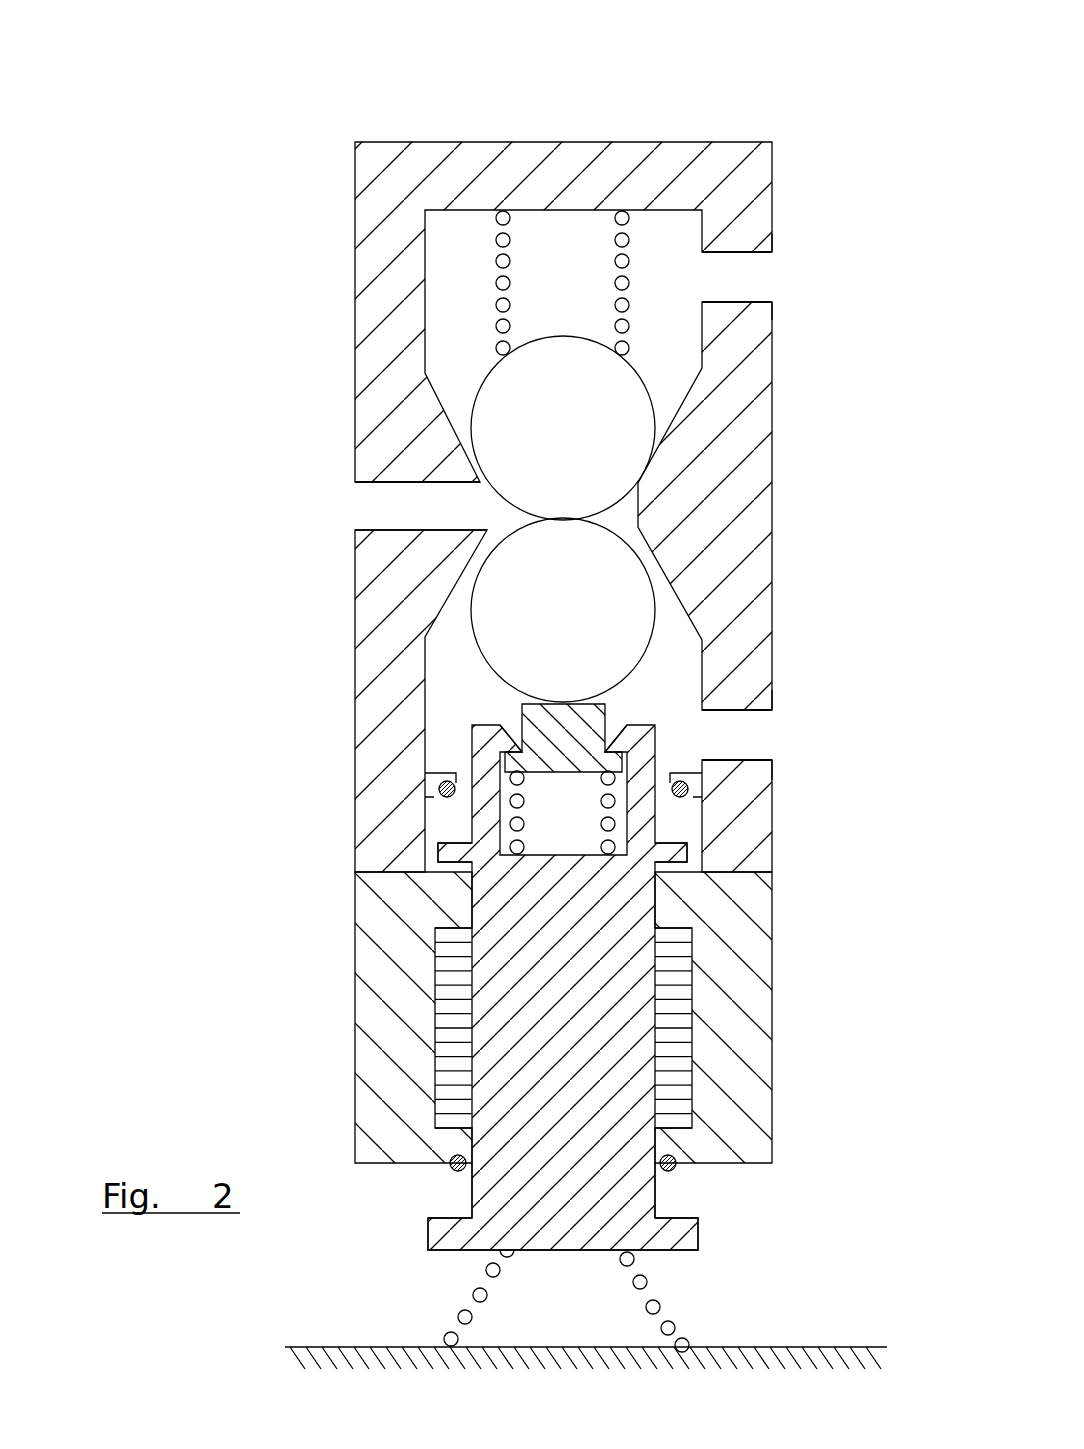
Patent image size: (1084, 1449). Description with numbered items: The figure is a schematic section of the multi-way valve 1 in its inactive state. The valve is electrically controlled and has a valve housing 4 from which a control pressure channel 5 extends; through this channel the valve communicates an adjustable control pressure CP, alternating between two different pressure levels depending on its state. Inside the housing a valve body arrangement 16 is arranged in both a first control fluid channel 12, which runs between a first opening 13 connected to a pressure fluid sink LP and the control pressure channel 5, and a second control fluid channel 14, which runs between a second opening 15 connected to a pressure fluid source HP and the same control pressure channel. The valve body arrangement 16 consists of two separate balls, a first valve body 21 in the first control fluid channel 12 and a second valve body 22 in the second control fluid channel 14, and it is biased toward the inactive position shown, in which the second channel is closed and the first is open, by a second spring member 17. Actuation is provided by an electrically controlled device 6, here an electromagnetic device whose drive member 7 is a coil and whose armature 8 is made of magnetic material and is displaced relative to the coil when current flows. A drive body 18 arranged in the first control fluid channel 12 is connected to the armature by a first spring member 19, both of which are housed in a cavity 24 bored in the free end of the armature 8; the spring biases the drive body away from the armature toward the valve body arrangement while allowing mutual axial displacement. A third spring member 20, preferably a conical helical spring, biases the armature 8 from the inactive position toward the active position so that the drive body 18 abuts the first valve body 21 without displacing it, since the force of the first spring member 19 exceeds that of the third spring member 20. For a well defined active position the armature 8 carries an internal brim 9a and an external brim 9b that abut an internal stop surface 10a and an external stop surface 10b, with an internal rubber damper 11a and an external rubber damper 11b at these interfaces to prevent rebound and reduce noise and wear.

The multi-way valve 1 is at (640, 120).
The valve housing 4 is at (377, 313).
The control pressure channel 5 is at (410, 503).
The electrically controlled device 6 is at (340, 942).
The drive member 7 is at (452, 1063).
The armature 8 is at (453, 1190).
The internal brim 9a is at (683, 832).
The external brim 9b is at (683, 1230).
The internal stop surface 10a is at (433, 790).
The external stop surface 10b is at (677, 1167).
The internal rubber damper 11a is at (443, 788).
The external rubber damper 11b is at (450, 1168).
The first control fluid channel 12 is at (728, 717).
The first opening 13 is at (770, 726).
The second control fluid channel 14 is at (733, 273).
The second opening 15 is at (773, 282).
The valve body arrangement 16 is at (470, 665).
The second spring member 17 is at (503, 242).
The drive body 18 is at (548, 732).
The first spring member 19 is at (517, 823).
The third spring member 20 is at (480, 1295).
The first valve body 21 is at (608, 575).
The second valve body 22 is at (598, 447).
The cavity 24 is at (542, 835).
The control pressure CP is at (380, 504).
The pressure fluid source HP is at (819, 273).
The pressure fluid sink LP is at (811, 718).